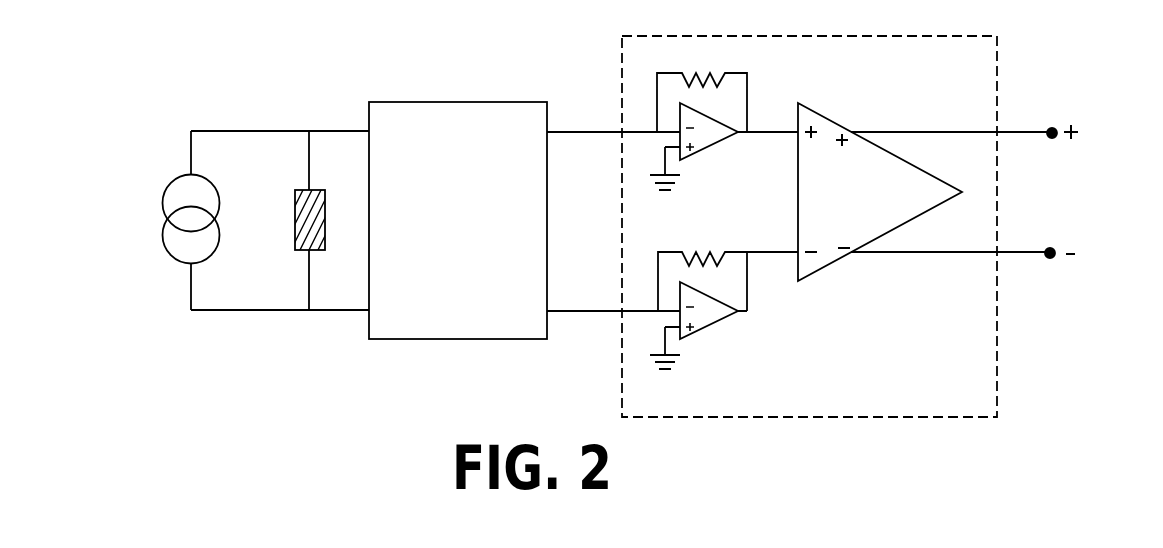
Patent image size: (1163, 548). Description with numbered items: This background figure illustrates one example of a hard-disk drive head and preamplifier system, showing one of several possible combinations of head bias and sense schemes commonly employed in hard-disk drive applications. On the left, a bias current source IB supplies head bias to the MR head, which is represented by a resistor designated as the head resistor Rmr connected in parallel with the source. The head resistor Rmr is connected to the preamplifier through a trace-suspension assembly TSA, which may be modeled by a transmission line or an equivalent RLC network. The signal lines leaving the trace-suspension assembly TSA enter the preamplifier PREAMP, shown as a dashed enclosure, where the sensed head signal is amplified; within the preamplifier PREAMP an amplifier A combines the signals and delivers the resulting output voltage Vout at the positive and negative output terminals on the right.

The bias current source IB is at (149, 196).
The head resistor Rmr is at (304, 220).
The trace-suspension assembly TSA is at (458, 220).
The preamplifier PREAMP is at (809, 226).
The amplifier A is at (880, 192).
The output voltage Vout is at (986, 191).